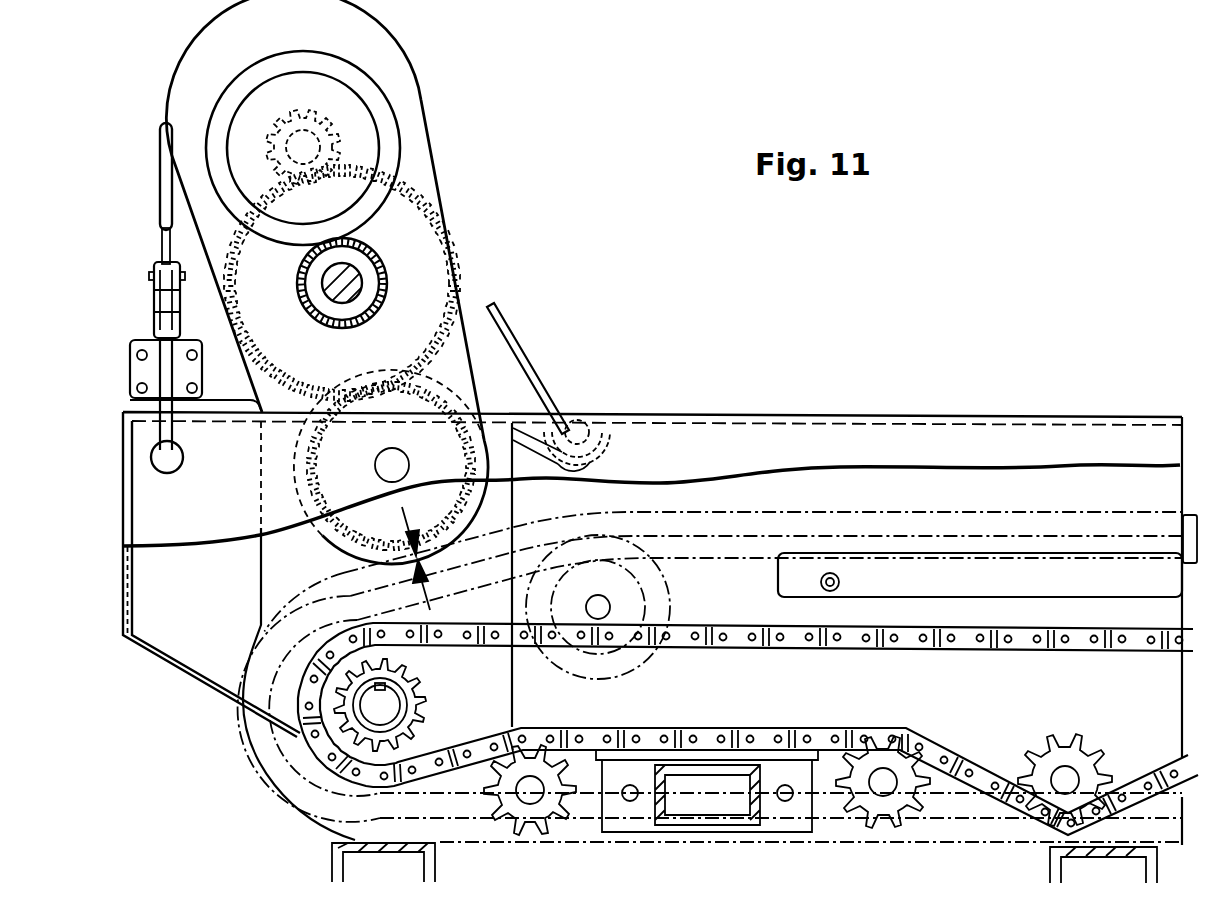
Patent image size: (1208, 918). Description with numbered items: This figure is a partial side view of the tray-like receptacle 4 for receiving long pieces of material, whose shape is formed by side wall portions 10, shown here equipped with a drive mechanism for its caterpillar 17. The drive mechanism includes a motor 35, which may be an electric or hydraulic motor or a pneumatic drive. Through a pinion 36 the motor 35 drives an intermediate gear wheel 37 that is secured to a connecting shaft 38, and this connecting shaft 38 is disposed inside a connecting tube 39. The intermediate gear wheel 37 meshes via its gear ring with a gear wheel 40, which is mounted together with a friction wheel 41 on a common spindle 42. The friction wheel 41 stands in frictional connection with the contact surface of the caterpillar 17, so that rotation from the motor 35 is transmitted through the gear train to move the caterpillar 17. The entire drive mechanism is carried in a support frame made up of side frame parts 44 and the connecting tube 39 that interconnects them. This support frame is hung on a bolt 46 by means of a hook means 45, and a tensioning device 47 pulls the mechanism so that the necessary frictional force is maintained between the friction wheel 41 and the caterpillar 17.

The receptacle 4 is at (948, 410).
The side wall portion 10 is at (145, 498).
The caterpillar 17 is at (733, 523).
The motor 35 is at (372, 98).
The pinion 36 is at (345, 143).
The intermediate gear wheel 37 is at (453, 293).
The connecting shaft 38 is at (363, 268).
The connecting tube 39 is at (387, 283).
The gear wheel 40 is at (420, 383).
The friction wheel 41 is at (420, 397).
The common spindle 42 is at (375, 468).
The side frame part 44 is at (207, 92).
The hook means 45 is at (507, 335).
The bolt 46 is at (583, 427).
The tensioning device 47 is at (146, 306).